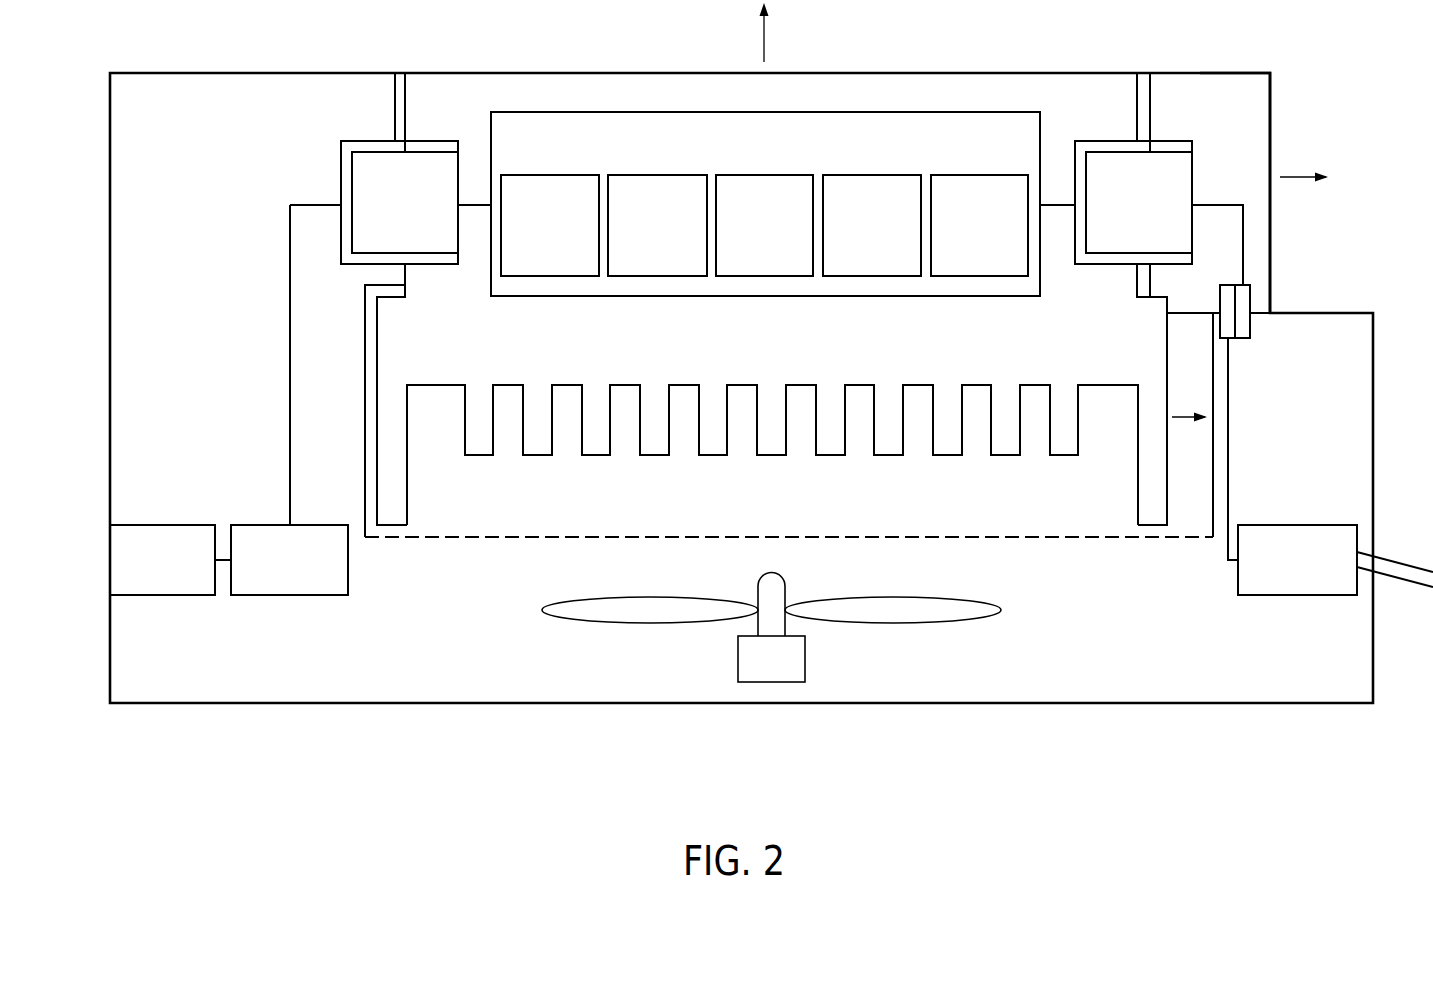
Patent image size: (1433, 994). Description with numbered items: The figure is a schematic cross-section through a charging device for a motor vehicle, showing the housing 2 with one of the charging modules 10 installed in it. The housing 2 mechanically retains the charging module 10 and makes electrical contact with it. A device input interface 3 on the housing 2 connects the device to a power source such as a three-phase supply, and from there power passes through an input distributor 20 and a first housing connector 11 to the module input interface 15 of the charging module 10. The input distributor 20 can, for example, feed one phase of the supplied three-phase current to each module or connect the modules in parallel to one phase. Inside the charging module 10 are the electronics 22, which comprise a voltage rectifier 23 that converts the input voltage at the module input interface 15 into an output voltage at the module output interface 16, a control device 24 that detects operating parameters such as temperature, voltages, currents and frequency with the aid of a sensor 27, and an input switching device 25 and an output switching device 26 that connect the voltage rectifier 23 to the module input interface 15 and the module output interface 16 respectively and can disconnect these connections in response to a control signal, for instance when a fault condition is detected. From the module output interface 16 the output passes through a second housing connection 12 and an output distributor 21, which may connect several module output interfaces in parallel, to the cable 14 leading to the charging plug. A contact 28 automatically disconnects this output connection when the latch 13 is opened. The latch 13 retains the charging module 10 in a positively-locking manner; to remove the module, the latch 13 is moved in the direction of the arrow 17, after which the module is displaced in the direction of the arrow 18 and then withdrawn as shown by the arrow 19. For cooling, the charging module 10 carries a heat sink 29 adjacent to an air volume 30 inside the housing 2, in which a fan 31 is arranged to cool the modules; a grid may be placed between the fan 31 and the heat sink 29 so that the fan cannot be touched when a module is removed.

The housing 2 is at (482, 707).
The device input interface 3 is at (152, 596).
The charging module 10 is at (445, 332).
The first housing connector 11 is at (367, 128).
The second housing connection 12 is at (1165, 120).
The latch 13 is at (1217, 93).
The cable 14 is at (1397, 565).
The module input interface 15 is at (437, 152).
The module output interface 16 is at (1113, 152).
The arrow 17 is at (1293, 177).
The arrow 18 is at (1176, 420).
The arrow 19 is at (766, 42).
The input distributor 20 is at (275, 596).
The output distributor 21 is at (1297, 596).
The electronics 22 is at (545, 112).
The voltage rectifier 23 is at (545, 175).
The control device 24 is at (652, 175).
The input switching device 25 is at (760, 175).
The output switching device 26 is at (866, 175).
The sensor 27 is at (966, 175).
The contact 28 is at (1265, 328).
The heat sink 29 is at (480, 480).
The air volume 30 is at (1030, 540).
The fan 31 is at (834, 647).